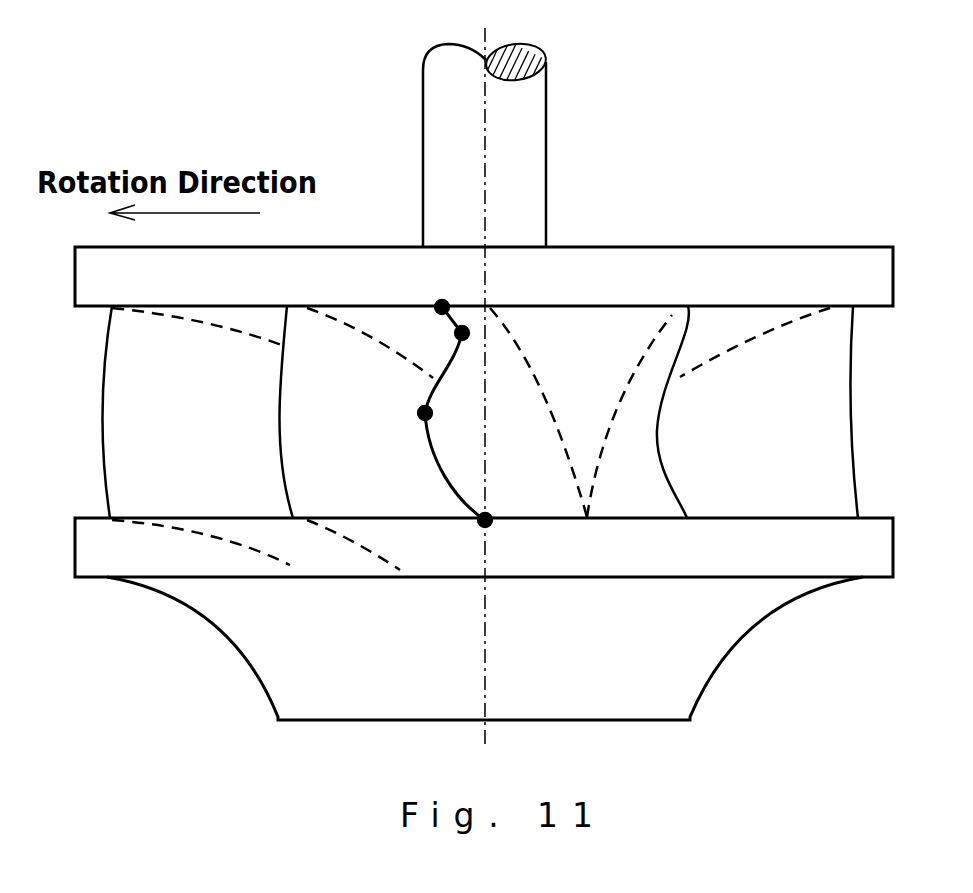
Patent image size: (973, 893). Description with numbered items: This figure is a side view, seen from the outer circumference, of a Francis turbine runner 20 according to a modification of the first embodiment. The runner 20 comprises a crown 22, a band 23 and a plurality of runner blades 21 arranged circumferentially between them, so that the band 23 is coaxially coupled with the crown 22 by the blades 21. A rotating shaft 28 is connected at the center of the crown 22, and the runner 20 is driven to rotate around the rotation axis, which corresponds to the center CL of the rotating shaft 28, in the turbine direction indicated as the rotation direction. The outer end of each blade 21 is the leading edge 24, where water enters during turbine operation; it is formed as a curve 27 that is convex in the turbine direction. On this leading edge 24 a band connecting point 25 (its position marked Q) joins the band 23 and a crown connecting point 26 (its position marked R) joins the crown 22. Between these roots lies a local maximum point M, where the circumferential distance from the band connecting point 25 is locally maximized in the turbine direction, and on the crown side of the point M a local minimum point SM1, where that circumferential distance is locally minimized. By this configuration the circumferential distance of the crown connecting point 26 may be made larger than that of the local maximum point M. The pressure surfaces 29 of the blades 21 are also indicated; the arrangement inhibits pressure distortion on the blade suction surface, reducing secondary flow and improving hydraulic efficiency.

The Francis turbine runner 20 is at (727, 200).
The runner blade 21 is at (198, 478).
The crown 22 is at (835, 272).
The band 23 is at (742, 627).
The leading edge 24 is at (433, 463).
The band connecting point 25 is at (487, 521).
The crown connecting point 26 is at (440, 305).
The curve 27 is at (453, 515).
The rotating shaft 28 is at (547, 88).
The pressure surface 29 is at (327, 498).
The crown connecting point position R is at (448, 276).
The local maximum point M is at (425, 415).
The band connecting point position Q is at (476, 543).
The center of rotating shaft CL is at (490, 36).
The local minimum point SM1 is at (463, 332).